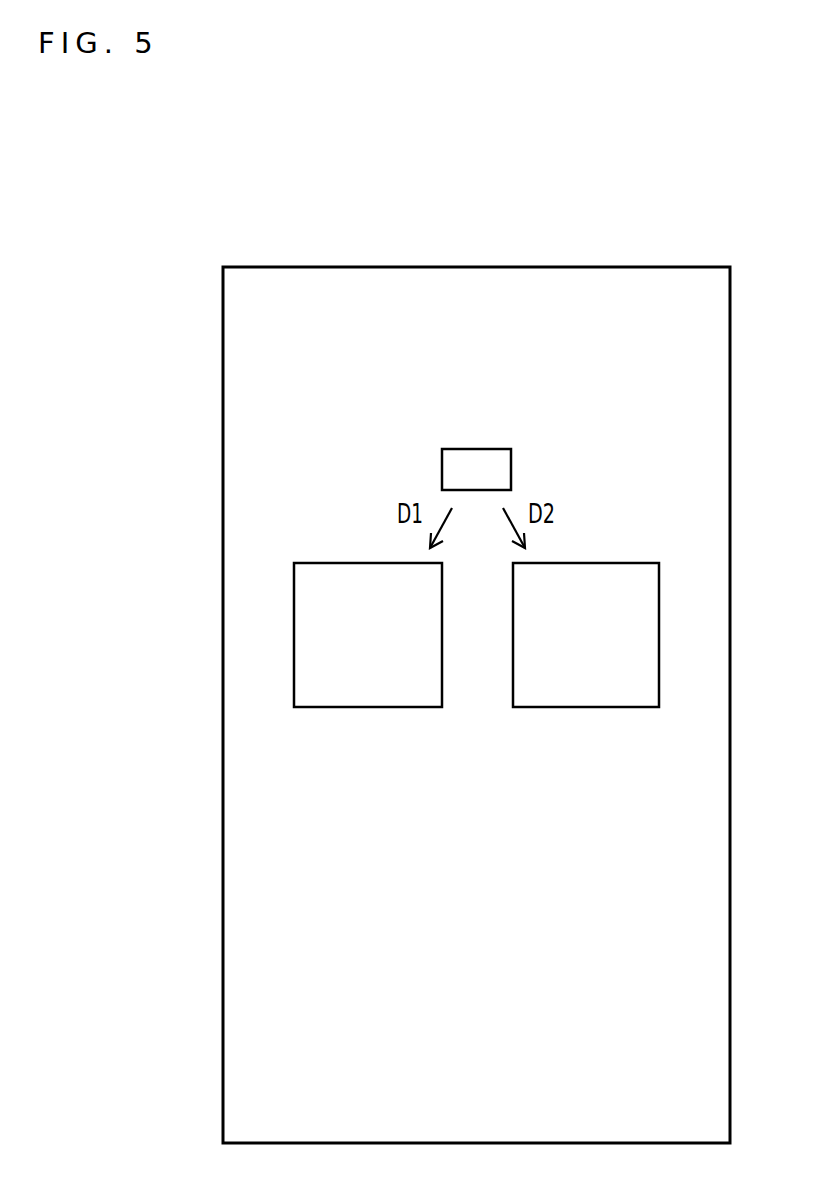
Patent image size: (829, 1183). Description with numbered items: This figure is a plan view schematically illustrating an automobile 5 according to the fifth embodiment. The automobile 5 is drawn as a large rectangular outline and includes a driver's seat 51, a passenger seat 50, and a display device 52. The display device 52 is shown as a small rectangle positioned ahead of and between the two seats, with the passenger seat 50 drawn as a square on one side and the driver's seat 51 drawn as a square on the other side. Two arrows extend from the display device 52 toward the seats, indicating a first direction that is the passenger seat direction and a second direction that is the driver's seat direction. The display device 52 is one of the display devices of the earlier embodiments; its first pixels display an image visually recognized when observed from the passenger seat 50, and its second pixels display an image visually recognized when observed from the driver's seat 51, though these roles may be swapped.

The automobile 5 is at (730, 644).
The passenger seat 50 is at (368, 707).
The driver's seat 51 is at (585, 707).
The display device 52 is at (478, 449).